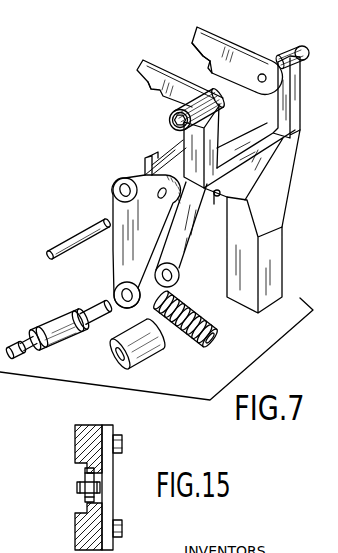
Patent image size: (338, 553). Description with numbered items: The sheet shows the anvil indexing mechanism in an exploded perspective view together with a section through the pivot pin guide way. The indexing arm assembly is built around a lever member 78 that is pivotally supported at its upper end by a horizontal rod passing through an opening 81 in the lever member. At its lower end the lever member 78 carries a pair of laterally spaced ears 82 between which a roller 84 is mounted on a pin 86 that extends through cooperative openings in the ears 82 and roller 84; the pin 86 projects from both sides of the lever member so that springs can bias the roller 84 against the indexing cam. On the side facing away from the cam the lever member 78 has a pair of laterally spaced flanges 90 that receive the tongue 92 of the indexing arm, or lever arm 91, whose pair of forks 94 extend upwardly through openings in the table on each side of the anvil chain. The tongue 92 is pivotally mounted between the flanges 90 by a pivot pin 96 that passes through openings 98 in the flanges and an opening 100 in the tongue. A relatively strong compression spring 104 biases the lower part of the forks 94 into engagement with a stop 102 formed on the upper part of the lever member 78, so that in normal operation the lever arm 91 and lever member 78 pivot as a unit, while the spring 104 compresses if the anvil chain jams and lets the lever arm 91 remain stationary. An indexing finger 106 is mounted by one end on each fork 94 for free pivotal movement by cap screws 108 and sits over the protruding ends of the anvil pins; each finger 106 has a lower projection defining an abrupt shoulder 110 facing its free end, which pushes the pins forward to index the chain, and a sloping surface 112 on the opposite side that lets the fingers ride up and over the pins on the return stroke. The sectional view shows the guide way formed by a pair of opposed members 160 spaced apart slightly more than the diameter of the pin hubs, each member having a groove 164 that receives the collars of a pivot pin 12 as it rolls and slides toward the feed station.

In FIG. 15, the pivot pin 12 is at (76, 487).
In FIG. 7, the lever member 78 is at (133, 236).
In FIG. 7, the opening 81 is at (117, 196).
In FIG. 7, the ears 82 is at (138, 302).
In FIG. 7, the roller 84 is at (145, 360).
In FIG. 7, the pin 86 is at (59, 335).
In FIG. 7, the flanges 90 is at (194, 242).
In FIG. 7, the lever arm 91 is at (282, 215).
In FIG. 7, the tongue 92 is at (273, 253).
In FIG. 7, the forks 94 is at (268, 108).
In FIG. 7, the pivot pin 96 is at (75, 238).
In FIG. 7, the openings 98 is at (157, 196).
In FIG. 7, the opening 100 is at (217, 198).
In FIG. 7, the stop 102 is at (152, 153).
In FIG. 7, the compression spring 104 is at (197, 352).
In FIG. 7, the indexing finger 106 is at (213, 33).
In FIG. 7, the cap screws 108 is at (174, 109).
In FIG. 7, the shoulder 110 is at (205, 61).
In FIG. 7, the sloping surface 112 is at (208, 59).
In FIG. 15, the opposed members 160 is at (83, 440).
In FIG. 15, the groove 164 is at (91, 469).